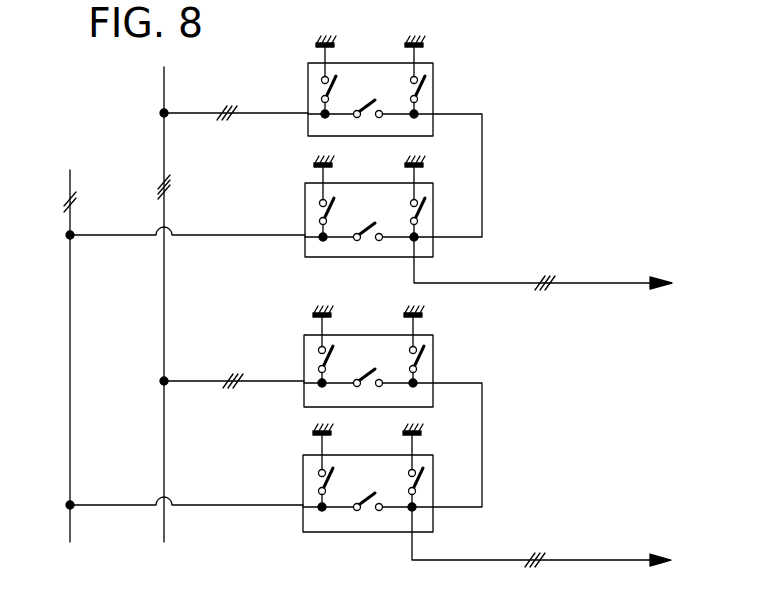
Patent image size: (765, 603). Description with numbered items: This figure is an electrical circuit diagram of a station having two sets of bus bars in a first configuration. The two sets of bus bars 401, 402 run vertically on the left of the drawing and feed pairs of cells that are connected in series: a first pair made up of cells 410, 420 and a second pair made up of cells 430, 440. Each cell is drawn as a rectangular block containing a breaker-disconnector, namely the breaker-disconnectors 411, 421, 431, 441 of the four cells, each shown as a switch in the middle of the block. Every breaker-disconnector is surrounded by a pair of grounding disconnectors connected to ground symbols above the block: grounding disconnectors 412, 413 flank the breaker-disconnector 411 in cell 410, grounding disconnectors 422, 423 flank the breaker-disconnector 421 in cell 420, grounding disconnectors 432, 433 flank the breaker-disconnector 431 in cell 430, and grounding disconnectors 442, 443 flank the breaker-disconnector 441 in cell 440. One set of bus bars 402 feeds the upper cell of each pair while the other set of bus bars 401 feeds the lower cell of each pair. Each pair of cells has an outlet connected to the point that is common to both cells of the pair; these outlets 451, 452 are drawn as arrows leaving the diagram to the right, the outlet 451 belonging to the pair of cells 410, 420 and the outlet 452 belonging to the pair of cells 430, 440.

The set of bus bars 401 is at (70, 320).
The set of bus bars 402 is at (164, 320).
The cell 410 is at (386, 46).
The breaker-disconnector 411 is at (366, 118).
The grounding disconnector 412 is at (322, 89).
The grounding disconnector 413 is at (428, 89).
The cell 420 is at (305, 183).
The breaker-disconnector 421 is at (367, 240).
The grounding disconnector 422 is at (320, 209).
The grounding disconnector 423 is at (424, 213).
The cell 430 is at (304, 335).
The breaker-disconnector 431 is at (367, 390).
The grounding disconnector 432 is at (320, 358).
The grounding disconnector 433 is at (424, 361).
The cell 440 is at (303, 455).
The breaker-disconnector 441 is at (367, 515).
The left contact of fourth relay 442 is at (320, 480).
The right contact of fourth relay 443 is at (423, 486).
The outlet 451 is at (593, 283).
The outlet 452 is at (577, 560).